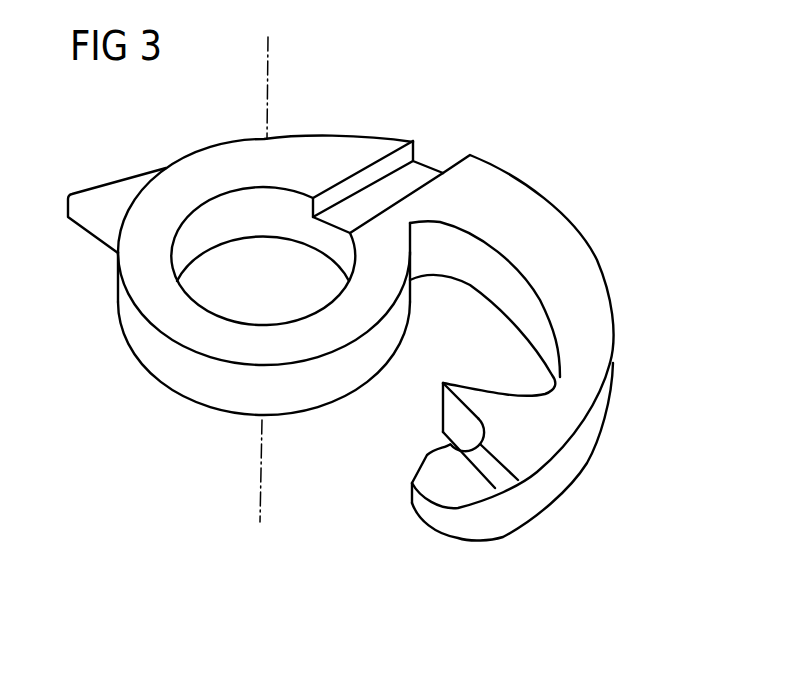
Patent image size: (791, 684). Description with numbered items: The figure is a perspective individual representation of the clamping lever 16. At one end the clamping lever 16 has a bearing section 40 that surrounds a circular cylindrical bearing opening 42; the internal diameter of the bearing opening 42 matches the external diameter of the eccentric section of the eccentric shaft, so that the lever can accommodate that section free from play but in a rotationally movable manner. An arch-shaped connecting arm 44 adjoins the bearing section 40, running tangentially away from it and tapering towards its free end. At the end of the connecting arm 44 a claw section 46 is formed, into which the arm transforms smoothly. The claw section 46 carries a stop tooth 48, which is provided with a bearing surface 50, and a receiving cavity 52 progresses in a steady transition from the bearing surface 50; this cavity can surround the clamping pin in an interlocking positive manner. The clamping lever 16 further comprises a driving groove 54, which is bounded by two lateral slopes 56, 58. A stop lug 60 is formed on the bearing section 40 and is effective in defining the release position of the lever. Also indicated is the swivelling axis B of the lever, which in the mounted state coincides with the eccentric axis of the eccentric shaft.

The clamping lever 16 is at (570, 150).
The bearing section 40 is at (235, 419).
The bearing opening 42 is at (190, 247).
The connecting arm 44 is at (592, 241).
The claw section 46 is at (468, 543).
The stop tooth 48 is at (464, 393).
The bearing surface 50 is at (470, 412).
The receiving cavity 52 is at (458, 442).
The driving groove 54 is at (420, 172).
The lateral slope 56 is at (404, 144).
The lateral slope 58 is at (345, 230).
The stop lug 60 is at (104, 197).
The swivelling axis B is at (268, 92).